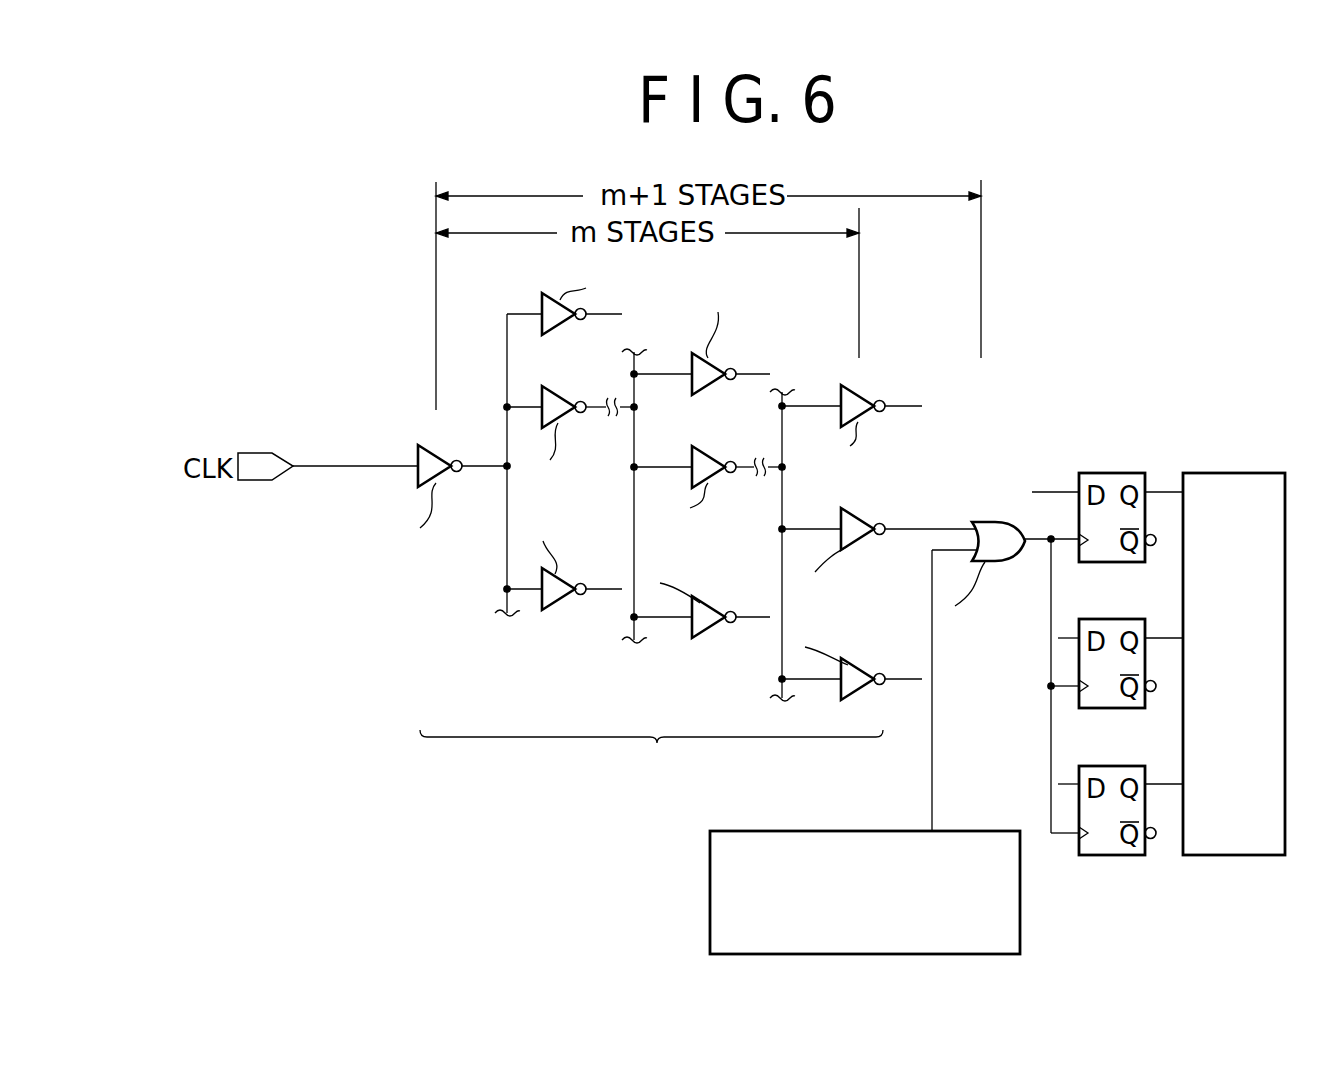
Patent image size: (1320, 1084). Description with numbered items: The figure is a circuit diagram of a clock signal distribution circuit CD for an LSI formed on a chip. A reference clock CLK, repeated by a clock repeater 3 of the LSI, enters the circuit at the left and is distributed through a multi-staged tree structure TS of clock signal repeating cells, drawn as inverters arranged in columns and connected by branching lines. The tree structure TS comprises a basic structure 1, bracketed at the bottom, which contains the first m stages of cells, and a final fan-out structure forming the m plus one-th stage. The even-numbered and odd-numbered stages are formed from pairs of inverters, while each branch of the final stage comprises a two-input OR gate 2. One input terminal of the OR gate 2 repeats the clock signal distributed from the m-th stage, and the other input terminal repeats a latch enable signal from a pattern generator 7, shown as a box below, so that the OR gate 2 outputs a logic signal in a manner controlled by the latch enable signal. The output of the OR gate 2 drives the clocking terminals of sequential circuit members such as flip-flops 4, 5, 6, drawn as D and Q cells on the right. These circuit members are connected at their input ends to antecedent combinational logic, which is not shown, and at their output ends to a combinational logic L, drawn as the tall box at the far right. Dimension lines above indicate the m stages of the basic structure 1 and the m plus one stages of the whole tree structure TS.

The basic structure 1 is at (688, 525).
The two-input OR gate 2 is at (993, 520).
The clock repeater 3 is at (262, 452).
The flip-flop 4 is at (1113, 473).
The flip-flop 5 is at (1113, 619).
The flip-flop 6 is at (1113, 766).
The pattern generator 7 is at (1020, 925).
The combinational logic L is at (1240, 473).
The multi-staged tree structure TS is at (1012, 268).
The clock signal distribution circuit CD is at (368, 662).